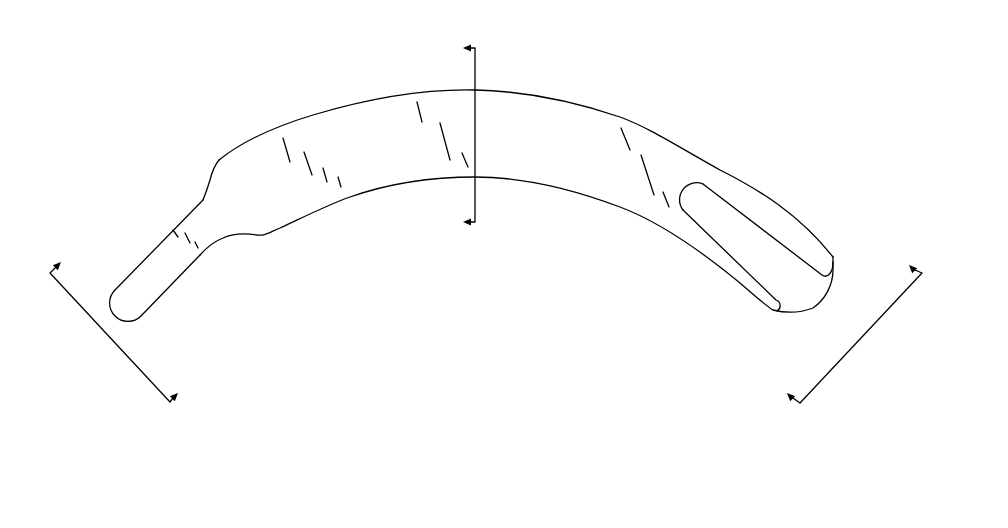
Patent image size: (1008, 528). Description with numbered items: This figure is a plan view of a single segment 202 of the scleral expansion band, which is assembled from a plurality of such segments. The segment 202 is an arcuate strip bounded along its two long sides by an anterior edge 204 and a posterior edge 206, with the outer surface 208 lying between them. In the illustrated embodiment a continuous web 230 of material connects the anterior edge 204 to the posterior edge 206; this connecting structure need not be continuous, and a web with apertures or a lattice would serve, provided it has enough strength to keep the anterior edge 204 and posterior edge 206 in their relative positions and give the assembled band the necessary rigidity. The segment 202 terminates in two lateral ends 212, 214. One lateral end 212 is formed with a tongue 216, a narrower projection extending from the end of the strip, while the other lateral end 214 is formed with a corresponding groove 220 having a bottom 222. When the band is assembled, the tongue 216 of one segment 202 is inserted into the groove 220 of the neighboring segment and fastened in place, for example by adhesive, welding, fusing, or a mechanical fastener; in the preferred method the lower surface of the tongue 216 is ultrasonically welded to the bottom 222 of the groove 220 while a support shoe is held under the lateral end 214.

The segment 202 is at (645, 67).
The anterior edge 204 is at (562, 190).
The posterior edge 206 is at (313, 115).
The outer surface 208 is at (538, 130).
The lateral end 212 is at (210, 172).
The lateral end 214 is at (833, 260).
The tongue 216 is at (182, 278).
The groove 220 is at (750, 268).
The bottom of the groove 222 is at (745, 237).
The web structure 230 is at (372, 165).